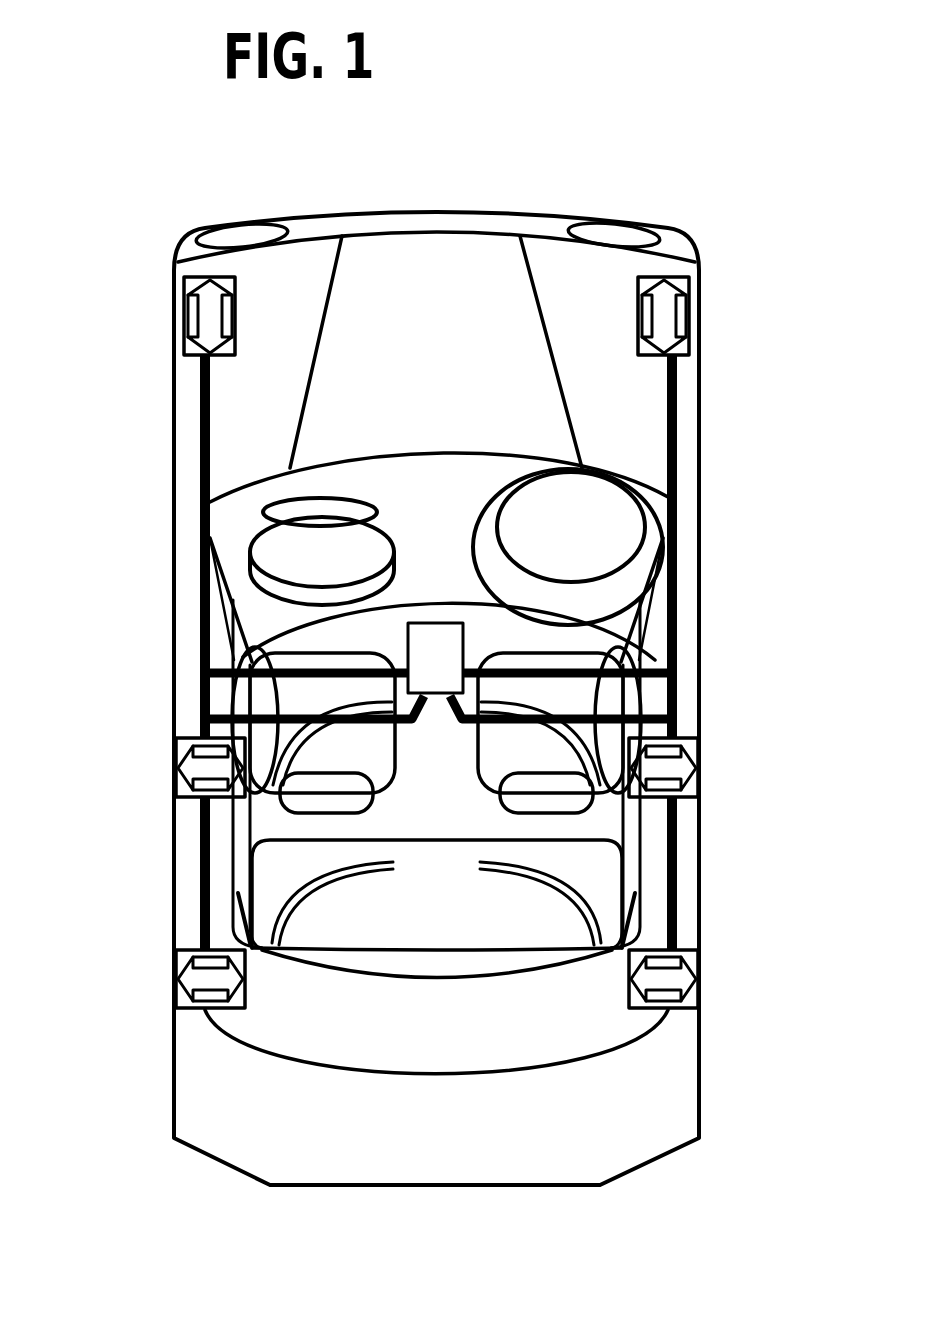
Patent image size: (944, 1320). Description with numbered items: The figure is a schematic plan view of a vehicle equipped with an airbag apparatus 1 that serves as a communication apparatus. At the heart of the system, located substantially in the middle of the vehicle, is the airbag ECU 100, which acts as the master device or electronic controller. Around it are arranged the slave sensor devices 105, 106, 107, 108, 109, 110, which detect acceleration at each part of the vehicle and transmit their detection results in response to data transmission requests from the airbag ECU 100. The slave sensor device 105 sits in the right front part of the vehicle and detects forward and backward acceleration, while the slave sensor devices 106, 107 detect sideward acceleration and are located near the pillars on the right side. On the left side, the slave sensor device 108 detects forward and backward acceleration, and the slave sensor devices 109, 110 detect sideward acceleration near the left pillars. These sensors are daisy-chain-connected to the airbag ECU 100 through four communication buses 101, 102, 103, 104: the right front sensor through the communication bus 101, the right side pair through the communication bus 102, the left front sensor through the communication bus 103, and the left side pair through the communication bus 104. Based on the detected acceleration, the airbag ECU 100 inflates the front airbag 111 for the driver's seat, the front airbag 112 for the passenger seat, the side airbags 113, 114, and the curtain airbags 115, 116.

The airbag apparatus 1 is at (716, 547).
The airbag ECU 100 is at (432, 622).
The communication bus 101 is at (676, 622).
The communication bus 102 is at (663, 822).
The communication bus 103 is at (200, 638).
The communication bus 104 is at (200, 828).
The slave sensor device 105 is at (678, 307).
The slave sensor device 106 is at (698, 747).
The slave sensor device 107 is at (699, 962).
The slave sensor device 108 is at (190, 310).
The slave sensor device 109 is at (176, 762).
The slave sensor device 110 is at (176, 968).
The front airbag for driver's seat 111 is at (623, 525).
The front airbag for passenger seat 112 is at (270, 548).
The side airbag 113 is at (623, 708).
The side airbag 114 is at (248, 708).
The curtain airbag 115 is at (652, 865).
The curtain airbag 116 is at (220, 890).